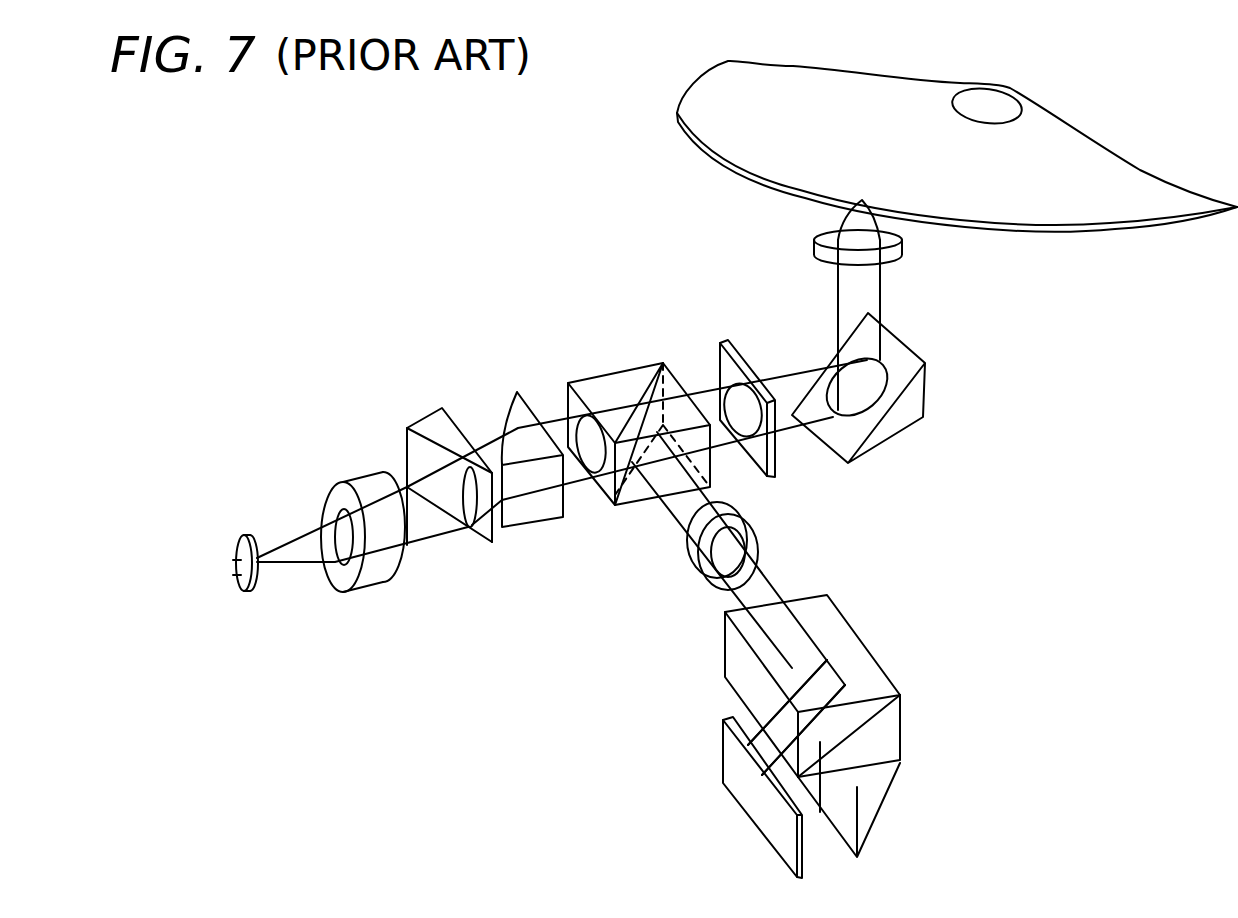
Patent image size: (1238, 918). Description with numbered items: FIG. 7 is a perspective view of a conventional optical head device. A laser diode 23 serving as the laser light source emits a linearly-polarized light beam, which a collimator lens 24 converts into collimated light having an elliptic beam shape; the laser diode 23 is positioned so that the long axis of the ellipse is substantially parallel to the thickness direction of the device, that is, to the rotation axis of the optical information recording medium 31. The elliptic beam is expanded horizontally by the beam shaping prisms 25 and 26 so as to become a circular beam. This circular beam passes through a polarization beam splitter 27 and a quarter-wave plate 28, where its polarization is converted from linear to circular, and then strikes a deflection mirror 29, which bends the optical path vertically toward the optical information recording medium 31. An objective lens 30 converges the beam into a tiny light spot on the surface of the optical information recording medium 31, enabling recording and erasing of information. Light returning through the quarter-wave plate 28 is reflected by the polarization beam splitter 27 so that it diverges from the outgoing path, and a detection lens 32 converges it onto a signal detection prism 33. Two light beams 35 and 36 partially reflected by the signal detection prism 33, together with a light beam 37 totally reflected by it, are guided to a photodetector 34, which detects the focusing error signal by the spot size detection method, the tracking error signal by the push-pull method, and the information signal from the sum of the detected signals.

The laser diode 23 is at (245, 592).
The collimator lens 24 is at (375, 580).
The beam shaping prism 25 is at (429, 425).
The beam shaping prism 26 is at (521, 408).
The polarization beam splitter 27 is at (608, 380).
The λ/4 plate 28 is at (720, 368).
The deflection mirror 29 is at (925, 414).
The objective lens 30 is at (903, 252).
The optical information recording medium 31 is at (1137, 208).
The detection lens 32 is at (718, 560).
The signal detection prism 33 is at (878, 668).
The photodetector 34 is at (752, 798).
The light beam 35 is at (777, 720).
The light beam 36 is at (777, 767).
The light beam 37 is at (812, 818).